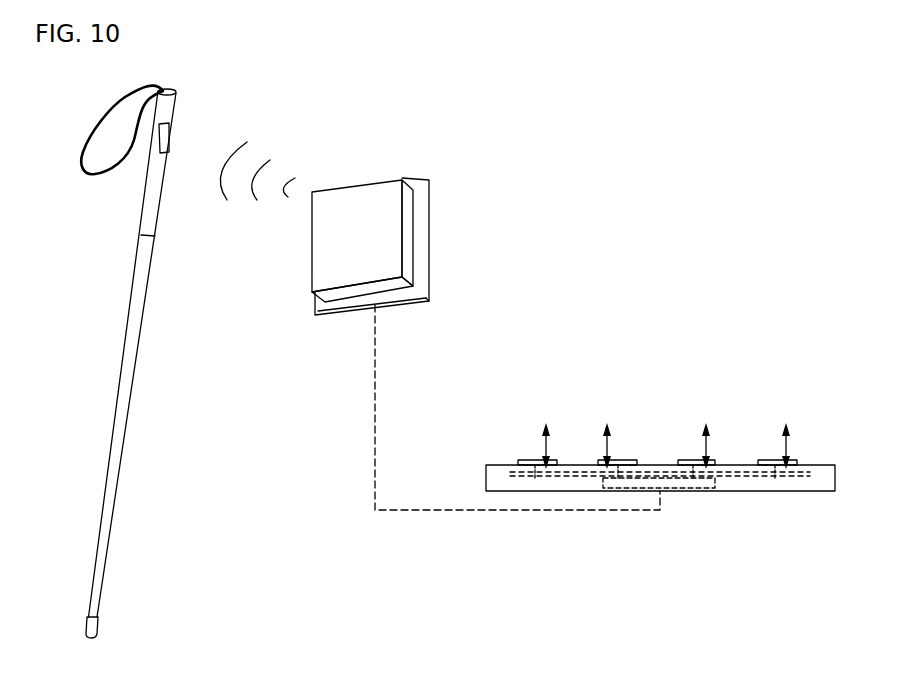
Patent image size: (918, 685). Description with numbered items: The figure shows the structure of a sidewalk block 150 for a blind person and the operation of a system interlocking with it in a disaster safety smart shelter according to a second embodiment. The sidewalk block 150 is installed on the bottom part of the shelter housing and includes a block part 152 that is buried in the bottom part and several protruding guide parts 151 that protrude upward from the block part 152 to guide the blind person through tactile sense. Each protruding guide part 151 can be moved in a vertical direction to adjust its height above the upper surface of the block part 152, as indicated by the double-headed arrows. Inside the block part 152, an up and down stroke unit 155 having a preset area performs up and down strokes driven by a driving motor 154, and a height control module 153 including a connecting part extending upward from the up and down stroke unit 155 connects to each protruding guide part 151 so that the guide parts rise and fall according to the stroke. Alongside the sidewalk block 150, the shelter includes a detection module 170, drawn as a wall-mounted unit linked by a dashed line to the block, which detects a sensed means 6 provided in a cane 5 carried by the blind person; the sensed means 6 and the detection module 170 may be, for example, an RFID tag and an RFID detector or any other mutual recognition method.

The cane for a blind person 5 is at (126, 336).
The sensed means 6 is at (168, 137).
The detection module 170 is at (372, 200).
The sidewalk block for a blind person 150 is at (676, 463).
The protruding guide part 151 is at (683, 462).
The block part 152 is at (820, 465).
The height control module 153 is at (665, 532).
The driving motor 154 is at (693, 488).
The up and down stroke unit 155 is at (750, 477).